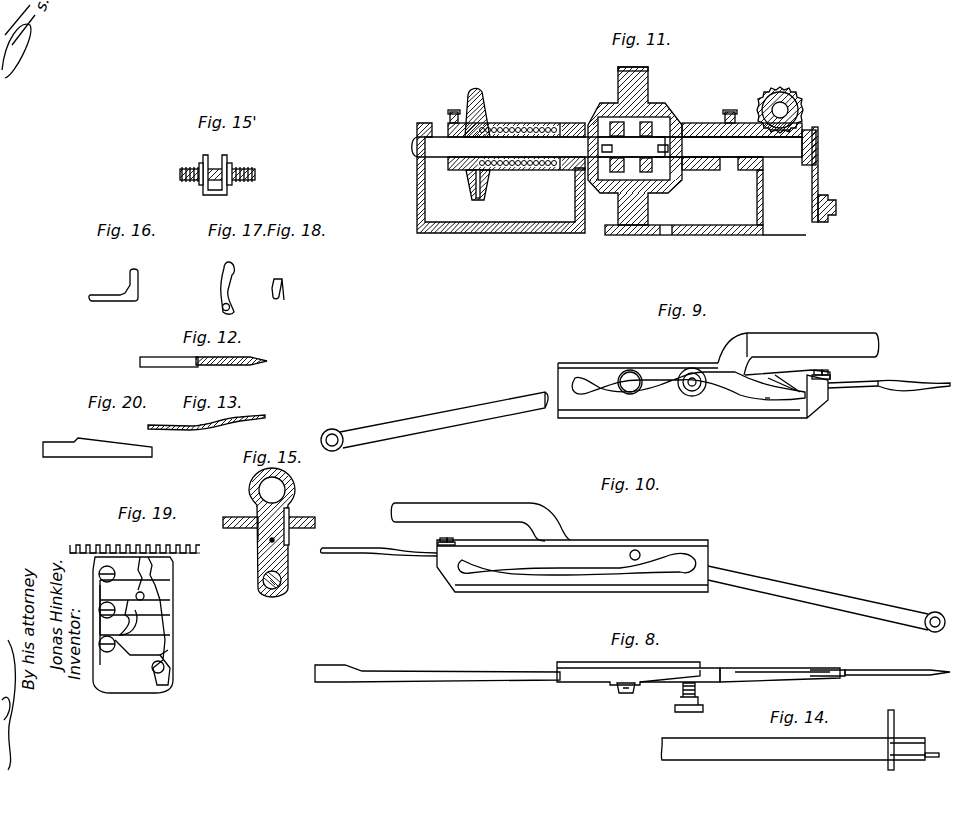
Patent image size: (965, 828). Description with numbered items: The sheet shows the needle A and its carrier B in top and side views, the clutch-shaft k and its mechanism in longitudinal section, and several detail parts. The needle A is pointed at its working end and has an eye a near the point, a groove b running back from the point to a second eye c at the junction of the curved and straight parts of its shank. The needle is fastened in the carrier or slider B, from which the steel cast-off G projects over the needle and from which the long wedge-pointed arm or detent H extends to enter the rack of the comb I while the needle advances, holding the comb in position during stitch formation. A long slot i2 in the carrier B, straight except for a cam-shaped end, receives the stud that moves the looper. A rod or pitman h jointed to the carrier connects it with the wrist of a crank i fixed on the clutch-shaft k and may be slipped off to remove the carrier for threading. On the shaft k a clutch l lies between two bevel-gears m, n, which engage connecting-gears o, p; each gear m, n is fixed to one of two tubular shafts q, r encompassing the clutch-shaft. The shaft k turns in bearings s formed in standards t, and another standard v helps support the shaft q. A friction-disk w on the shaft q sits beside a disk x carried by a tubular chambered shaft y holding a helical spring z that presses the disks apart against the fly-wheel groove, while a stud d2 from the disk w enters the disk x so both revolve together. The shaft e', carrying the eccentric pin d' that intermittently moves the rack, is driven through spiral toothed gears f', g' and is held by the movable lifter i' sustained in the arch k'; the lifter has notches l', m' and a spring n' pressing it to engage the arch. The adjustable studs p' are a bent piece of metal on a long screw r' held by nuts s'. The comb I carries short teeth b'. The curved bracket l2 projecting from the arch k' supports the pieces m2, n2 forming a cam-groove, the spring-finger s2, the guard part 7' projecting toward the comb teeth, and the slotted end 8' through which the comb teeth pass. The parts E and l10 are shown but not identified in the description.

In FIG. 11, the eye a is at (645, 55).
In FIG. 9, the eye a is at (855, 378).
In FIG. 8, the eye a is at (935, 675).
In FIG. 12, the eye a is at (258, 372).
In FIG. 13, the eye a is at (253, 428).
In FIG. 8, the groove b is at (901, 690).
In FIG. 12, the groove b is at (239, 372).
In FIG. 13, the groove b is at (249, 408).
In FIG. 9, the eye c is at (789, 385).
In FIG. 12, the eye c is at (172, 369).
In FIG. 13, the eye c is at (203, 432).
In FIG. 9, the needle A is at (914, 379).
In FIG. 10, the needle A is at (379, 545).
In FIG. 8, the needle A is at (897, 662).
In FIG. 12, the needle A is at (231, 354).
In FIG. 13, the needle A is at (206, 417).
In FIG. 9, the carrier or slider B is at (694, 385).
In FIG. 10, the carrier or slider B is at (572, 558).
In FIG. 8, the carrier or slider B is at (537, 667).
In FIG. 9, the needle clamp plate E is at (688, 384).
In FIG. 10, the needle clamp plate E is at (574, 562).
In FIG. 8, the needle clamp plate E is at (672, 697).
In FIG. 9, the cast-off G is at (821, 374).
In FIG. 10, the cast-off G is at (436, 541).
In FIG. 8, the cast-off G is at (849, 663).
In FIG. 9, the wedge-pointed arm or detent H is at (798, 354).
In FIG. 10, the wedge-pointed arm or detent H is at (480, 522).
In FIG. 8, the wedge-pointed arm or detent H is at (780, 666).
In FIG. 9, the rod or pitman h is at (434, 421).
In FIG. 10, the rod or pitman h is at (826, 599).
In FIG. 9, the long slot i2 is at (765, 402).
In FIG. 10, the long slot i2 is at (598, 576).
In FIG. 19, the comb I is at (135, 542).
In FIG. 11, the clutch-shaft k is at (607, 147).
In FIG. 16, the clutch-shaft k is at (113, 285).
In FIG. 17, the clutch-shaft k is at (234, 288).
In FIG. 18, the clutch-shaft k is at (283, 289).
In FIG. 11, the clutch l is at (827, 198).
In FIG. 11, the shaft end flange l10 is at (820, 148).
In FIG. 11, the bevel-gear m is at (613, 138).
In FIG. 11, the bevel-gear n is at (648, 132).
In FIG. 11, the connecting-gear o is at (695, 146).
In FIG. 11, the connecting-gear p is at (684, 214).
In FIG. 11, the tubular shaft q is at (561, 146).
In FIG. 11, the tubular shaft r is at (742, 139).
In FIG. 11, the bearings s is at (589, 131).
In FIG. 11, the standards t is at (593, 178).
In FIG. 11, the standard v is at (665, 197).
In FIG. 11, the friction-disk w is at (456, 110).
In FIG. 11, the disk x is at (482, 112).
In FIG. 11, the tubular and chambered shaft y is at (520, 137).
In FIG. 11, the helical spring z is at (516, 139).
In FIG. 11, the stud d2 is at (482, 185).
In FIG. 11, the shaft e' is at (780, 99).
In FIG. 14, the shaft e' is at (793, 749).
In FIG. 15, the shaft e' is at (278, 532).
In FIG. 11, the spiral toothed gear f' is at (782, 107).
In FIG. 11, the spiral toothed gear g' is at (790, 116).
In FIG. 11, the crank i is at (784, 215).
In FIG. 14, the shaft-lifter i' is at (896, 740).
In FIG. 15, the shaft-lifter i' is at (249, 534).
In FIG. 14, the pin or stud d' is at (935, 747).
In FIG. 15, the arch k' is at (269, 515).
In FIG. 15, the notch l' is at (296, 523).
In FIG. 15, the notch m' is at (250, 543).
In FIG. 15, the spring n' is at (286, 541).
In FIG. 15', the adjustable studs p' is at (218, 167).
In FIG. 15', the long screw r' is at (223, 169).
In FIG. 15', the nuts s' is at (218, 186).
In FIG. 19, the teeth b' is at (136, 560).
In FIG. 19, the guard part 7' is at (154, 621).
In FIG. 19, the slot 8' is at (189, 570).
In FIG. 19, the spring-finger s2 is at (152, 590).
In FIG. 19, the cam-groove piece m2 is at (130, 625).
In FIG. 19, the curved bracket l2 is at (133, 625).
In FIG. 19, the cam-groove piece n2 is at (131, 619).